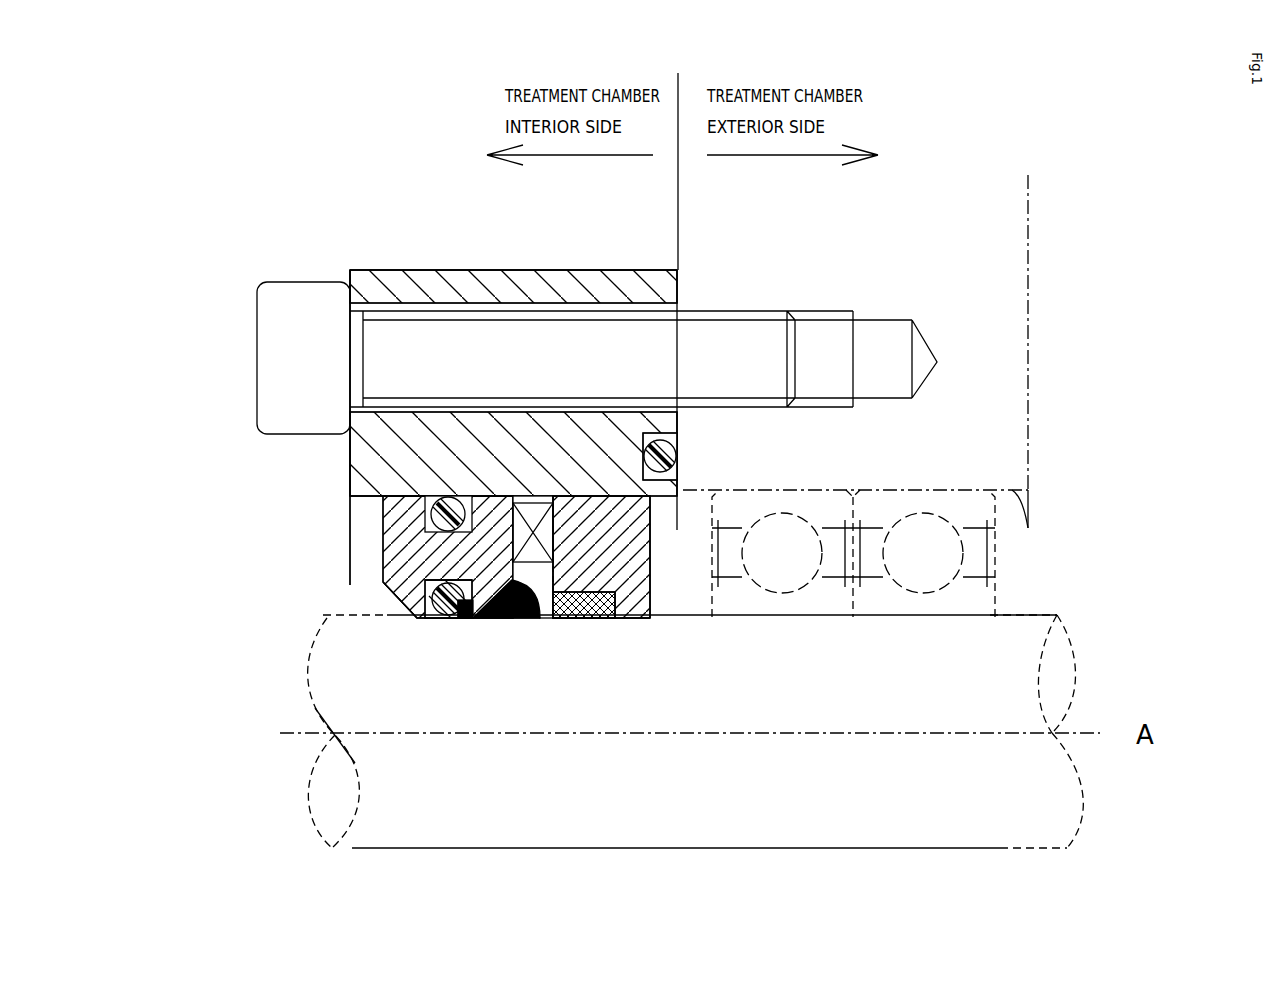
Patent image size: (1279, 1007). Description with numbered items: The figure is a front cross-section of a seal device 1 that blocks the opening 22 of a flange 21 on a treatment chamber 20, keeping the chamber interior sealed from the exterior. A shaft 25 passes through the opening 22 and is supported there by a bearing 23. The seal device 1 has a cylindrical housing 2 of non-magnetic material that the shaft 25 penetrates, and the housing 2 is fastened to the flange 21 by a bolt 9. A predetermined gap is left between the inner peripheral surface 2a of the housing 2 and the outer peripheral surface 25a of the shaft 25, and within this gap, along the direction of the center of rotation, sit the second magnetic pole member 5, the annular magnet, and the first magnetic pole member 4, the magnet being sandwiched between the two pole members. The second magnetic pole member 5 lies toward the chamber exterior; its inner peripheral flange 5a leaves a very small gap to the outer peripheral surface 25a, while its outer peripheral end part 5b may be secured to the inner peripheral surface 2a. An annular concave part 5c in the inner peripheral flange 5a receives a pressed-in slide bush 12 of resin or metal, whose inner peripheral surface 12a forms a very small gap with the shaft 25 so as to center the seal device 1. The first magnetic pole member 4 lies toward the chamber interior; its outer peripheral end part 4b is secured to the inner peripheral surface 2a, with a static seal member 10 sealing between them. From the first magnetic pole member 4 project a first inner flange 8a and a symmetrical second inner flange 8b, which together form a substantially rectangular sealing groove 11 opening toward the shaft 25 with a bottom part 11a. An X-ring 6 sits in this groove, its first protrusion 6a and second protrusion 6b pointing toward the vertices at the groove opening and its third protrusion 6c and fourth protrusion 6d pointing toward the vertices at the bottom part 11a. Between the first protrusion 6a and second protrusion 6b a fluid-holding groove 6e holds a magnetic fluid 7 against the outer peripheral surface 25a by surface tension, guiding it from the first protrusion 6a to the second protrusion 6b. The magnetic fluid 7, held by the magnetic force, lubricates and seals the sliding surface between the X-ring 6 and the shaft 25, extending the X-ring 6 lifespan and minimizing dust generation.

The seal device 1 is at (423, 157).
The housing 2 is at (378, 288).
The inner peripheral surface 2a is at (368, 505).
The first magnetic pole member 4 is at (400, 538).
The outer peripheral end part 4b is at (425, 492).
The second magnetic pole member 5 is at (637, 558).
The inner peripheral flange 5a is at (642, 620).
The outer peripheral end part 5b is at (628, 497).
The annular concave part 5c is at (640, 527).
The X-ring 6 is at (420, 615).
The first protrusion 6a is at (460, 618).
The second protrusion 6b is at (420, 618).
The third protrusion 6c is at (493, 618).
The fourth protrusion 6d is at (417, 612).
The fluid-holding groove 6e is at (438, 618).
The magnetic fluid 7 is at (573, 618).
The first inner flange 8a is at (517, 618).
The second inner flange 8b is at (428, 600).
The bolt 9 is at (275, 330).
The static seal member 10 is at (442, 500).
The sealing groove 11 is at (420, 618).
The bottom part 11a is at (437, 578).
The slide bush 12 is at (603, 618).
The inner peripheral surface 12a is at (610, 630).
The treatment chamber 20 is at (165, 470).
The flange 21 is at (968, 235).
The opening 22 is at (1028, 528).
The bearing 23 is at (967, 507).
The shaft 25 is at (985, 695).
The outer peripheral surface 25a is at (1030, 615).